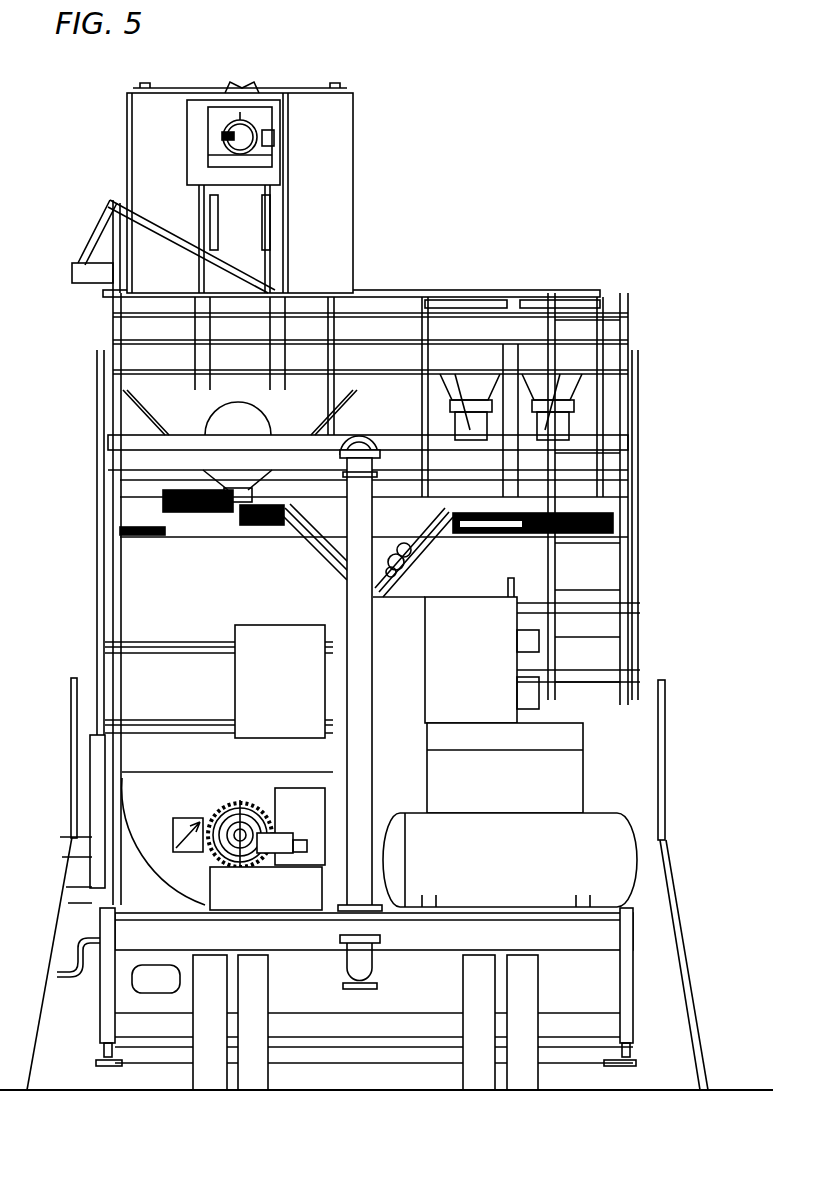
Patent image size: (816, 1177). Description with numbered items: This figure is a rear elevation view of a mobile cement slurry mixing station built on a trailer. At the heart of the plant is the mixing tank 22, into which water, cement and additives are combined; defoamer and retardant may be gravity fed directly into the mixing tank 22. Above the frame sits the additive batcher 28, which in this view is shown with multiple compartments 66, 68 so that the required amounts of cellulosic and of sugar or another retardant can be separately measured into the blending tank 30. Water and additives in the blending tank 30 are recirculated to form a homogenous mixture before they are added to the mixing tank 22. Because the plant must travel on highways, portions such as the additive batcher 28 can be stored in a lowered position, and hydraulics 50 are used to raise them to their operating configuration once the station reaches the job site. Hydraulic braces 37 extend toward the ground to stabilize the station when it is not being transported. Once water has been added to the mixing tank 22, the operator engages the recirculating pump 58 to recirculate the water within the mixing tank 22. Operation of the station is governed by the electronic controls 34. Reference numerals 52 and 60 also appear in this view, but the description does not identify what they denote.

The mixing tank 22 is at (138, 838).
The additive batcher 28 is at (603, 290).
The blending tank 30 is at (640, 701).
The electronic controls 34 is at (442, 607).
The hydraulic braces 37 is at (605, 1092).
The hydraulics 50 is at (95, 777).
The elevator tower 52 is at (293, 88).
The recirculating pump 58 is at (240, 870).
The storage tank 60 is at (620, 856).
The compartment 66 is at (575, 300).
The compartment 68 is at (453, 302).